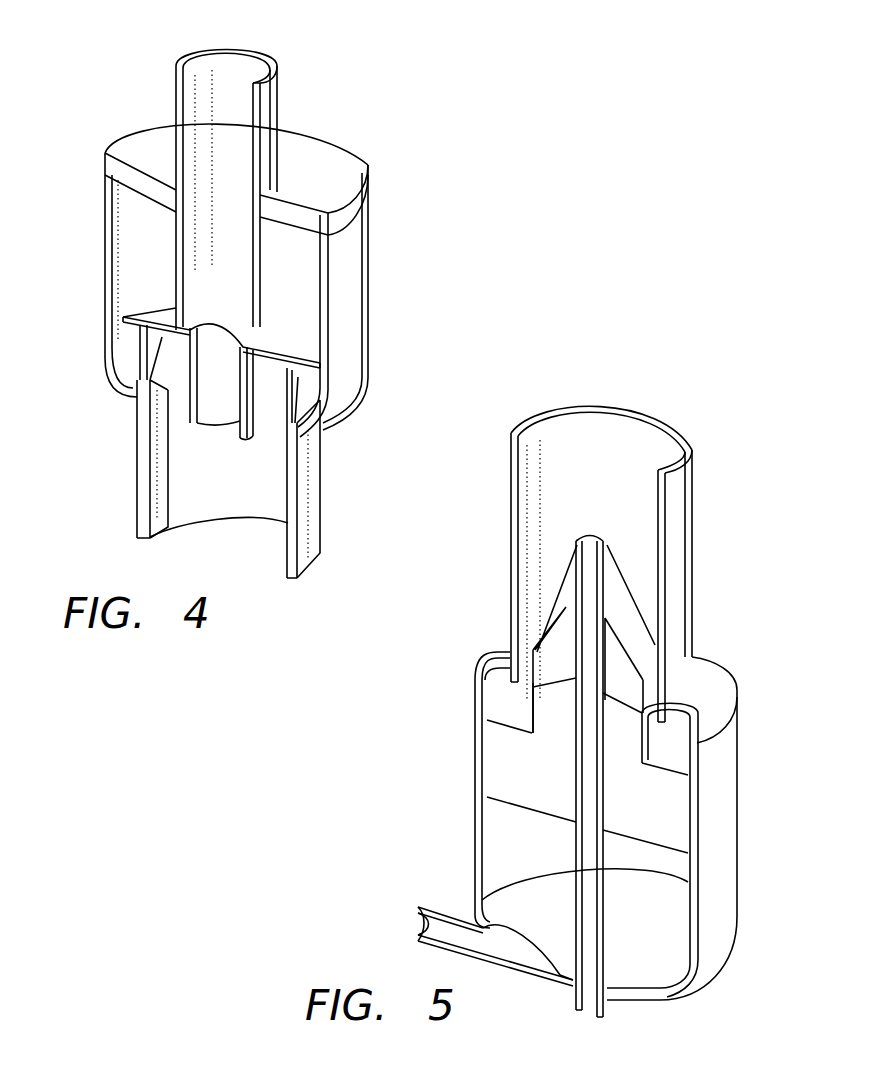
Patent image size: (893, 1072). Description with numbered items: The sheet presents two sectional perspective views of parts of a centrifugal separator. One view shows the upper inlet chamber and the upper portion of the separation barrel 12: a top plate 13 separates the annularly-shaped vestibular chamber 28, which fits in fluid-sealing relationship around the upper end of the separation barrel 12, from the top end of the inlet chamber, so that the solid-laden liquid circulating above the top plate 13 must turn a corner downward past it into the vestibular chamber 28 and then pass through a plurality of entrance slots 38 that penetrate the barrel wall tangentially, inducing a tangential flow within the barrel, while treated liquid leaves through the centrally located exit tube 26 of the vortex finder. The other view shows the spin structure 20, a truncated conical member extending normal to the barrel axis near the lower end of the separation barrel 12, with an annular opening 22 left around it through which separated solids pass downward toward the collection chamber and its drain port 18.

In FIG. 5, the separation barrel 12 is at (550, 462).
In FIG. 4, the top plate 13 is at (124, 317).
In FIG. 5, the drain port 18 is at (420, 906).
In FIG. 5, the spin structure 20 is at (568, 548).
In FIG. 5, the annular opening 22 is at (480, 683).
In FIG. 4, the exit tube 26 is at (269, 88).
In FIG. 4, the vestibular chamber 28 is at (128, 353).
In FIG. 4, the entrance slots 38 is at (145, 370).